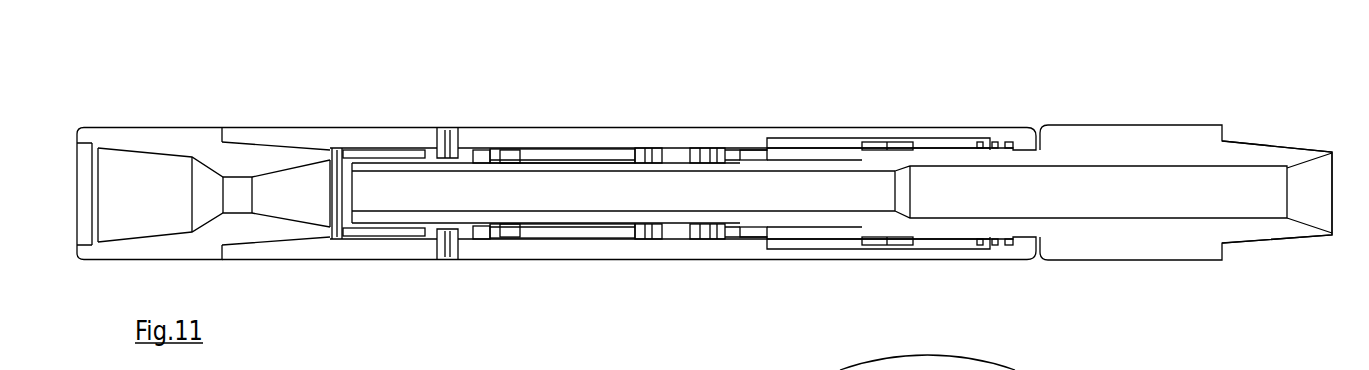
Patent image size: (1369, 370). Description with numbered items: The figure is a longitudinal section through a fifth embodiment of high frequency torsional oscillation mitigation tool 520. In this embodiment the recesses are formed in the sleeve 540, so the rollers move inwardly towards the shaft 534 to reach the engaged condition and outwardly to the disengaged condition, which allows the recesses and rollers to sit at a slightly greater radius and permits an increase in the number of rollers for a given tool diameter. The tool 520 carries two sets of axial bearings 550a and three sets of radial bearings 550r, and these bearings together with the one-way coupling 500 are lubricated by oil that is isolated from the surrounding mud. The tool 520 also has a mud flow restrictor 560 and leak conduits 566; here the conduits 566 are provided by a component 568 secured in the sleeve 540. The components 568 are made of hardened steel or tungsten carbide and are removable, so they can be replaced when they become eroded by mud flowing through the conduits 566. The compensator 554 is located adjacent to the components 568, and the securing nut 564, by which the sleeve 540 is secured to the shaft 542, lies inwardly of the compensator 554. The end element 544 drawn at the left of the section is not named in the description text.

The one-way coupling 500 is at (808, 138).
The mitigation tool 520 is at (1143, 282).
The shaft 534 is at (940, 230).
The sleeve 540 is at (327, 138).
The shaft 542 is at (1282, 150).
The nozzle insert 544 is at (160, 152).
The axial bearings 550a is at (700, 143).
The radial bearings 550r is at (512, 143).
The compensator 554 is at (482, 241).
The mud flow restrictor 560 is at (385, 142).
The securing nut 564 is at (590, 146).
The leak conduits 566 is at (447, 140).
The component 568 is at (442, 259).